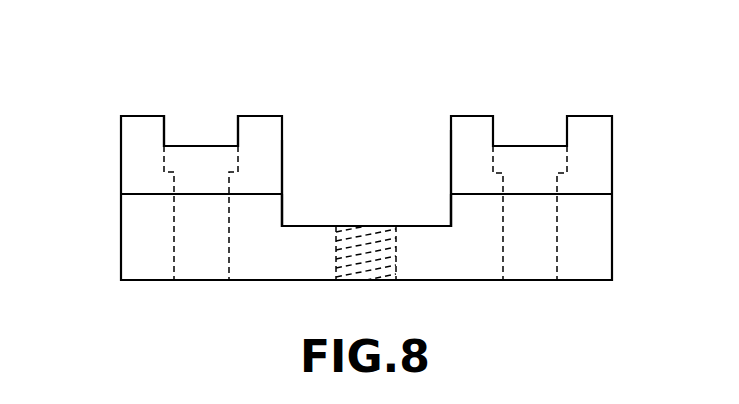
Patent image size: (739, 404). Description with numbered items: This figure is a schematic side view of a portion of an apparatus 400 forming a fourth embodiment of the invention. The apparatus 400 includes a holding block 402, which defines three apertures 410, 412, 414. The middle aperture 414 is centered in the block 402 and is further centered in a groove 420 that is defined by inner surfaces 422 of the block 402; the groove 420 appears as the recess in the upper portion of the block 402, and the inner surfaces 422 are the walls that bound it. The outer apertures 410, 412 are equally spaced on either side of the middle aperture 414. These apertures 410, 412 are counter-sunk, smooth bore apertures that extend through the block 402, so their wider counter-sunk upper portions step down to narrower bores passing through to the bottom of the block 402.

The apparatus 400 is at (299, 75).
The holding block 402 is at (145, 116).
The aperture 410 is at (173, 254).
The aperture 412 is at (502, 252).
The middle aperture 414 is at (392, 258).
The groove 420 is at (410, 170).
The inner surfaces 422 is at (282, 150).